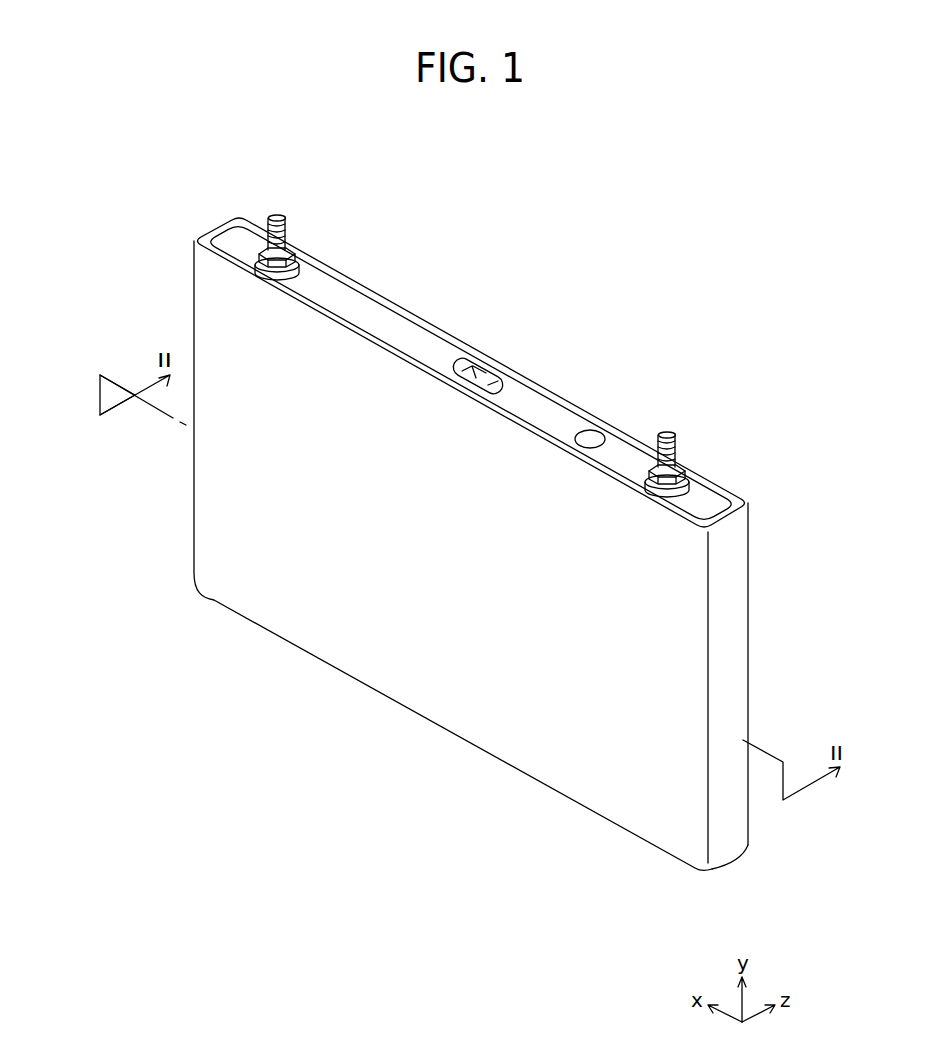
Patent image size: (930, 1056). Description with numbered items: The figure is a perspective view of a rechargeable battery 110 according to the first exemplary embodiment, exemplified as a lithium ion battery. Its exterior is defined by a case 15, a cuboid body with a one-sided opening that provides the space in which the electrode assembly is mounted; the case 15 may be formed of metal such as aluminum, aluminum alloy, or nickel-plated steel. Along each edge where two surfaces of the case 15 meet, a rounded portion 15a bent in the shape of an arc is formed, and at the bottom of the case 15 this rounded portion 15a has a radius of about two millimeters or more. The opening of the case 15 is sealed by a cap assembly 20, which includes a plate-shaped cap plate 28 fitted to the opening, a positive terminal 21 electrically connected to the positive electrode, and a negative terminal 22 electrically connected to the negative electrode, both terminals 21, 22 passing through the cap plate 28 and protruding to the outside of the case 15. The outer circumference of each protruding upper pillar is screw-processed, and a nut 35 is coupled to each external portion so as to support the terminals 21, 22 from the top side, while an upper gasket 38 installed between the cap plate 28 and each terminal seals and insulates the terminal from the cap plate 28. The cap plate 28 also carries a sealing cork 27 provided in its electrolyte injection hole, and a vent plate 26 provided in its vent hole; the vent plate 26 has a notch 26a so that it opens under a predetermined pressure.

The rechargeable battery 110 is at (590, 282).
The case 15 is at (427, 697).
The rounded portion 15a is at (752, 846).
The cap assembly 20 is at (565, 393).
The positive terminal 21 is at (284, 220).
The negative terminal 22 is at (666, 436).
The vent plate 26 is at (478, 366).
The notch 26a is at (492, 372).
The sealing cork 27 is at (594, 430).
The cap plate 28 is at (383, 315).
The nut 35 is at (680, 470).
The upper gasket 38 is at (684, 485).